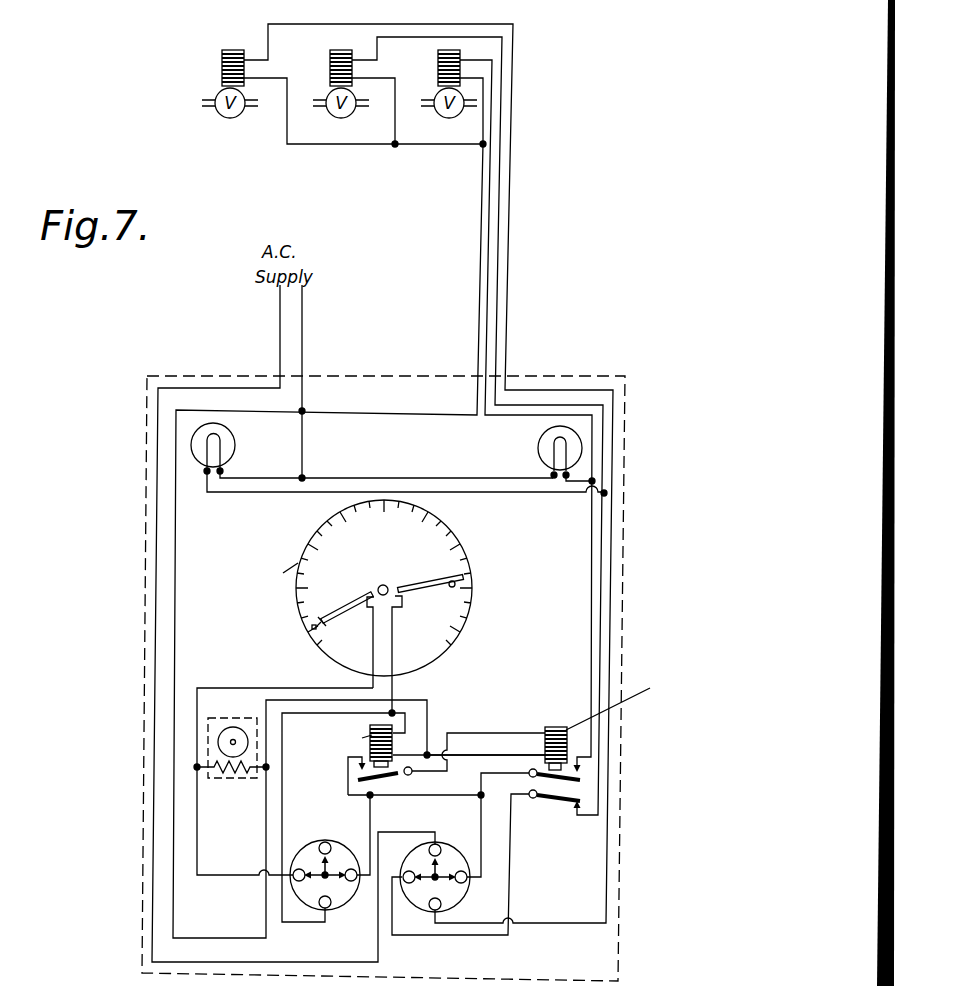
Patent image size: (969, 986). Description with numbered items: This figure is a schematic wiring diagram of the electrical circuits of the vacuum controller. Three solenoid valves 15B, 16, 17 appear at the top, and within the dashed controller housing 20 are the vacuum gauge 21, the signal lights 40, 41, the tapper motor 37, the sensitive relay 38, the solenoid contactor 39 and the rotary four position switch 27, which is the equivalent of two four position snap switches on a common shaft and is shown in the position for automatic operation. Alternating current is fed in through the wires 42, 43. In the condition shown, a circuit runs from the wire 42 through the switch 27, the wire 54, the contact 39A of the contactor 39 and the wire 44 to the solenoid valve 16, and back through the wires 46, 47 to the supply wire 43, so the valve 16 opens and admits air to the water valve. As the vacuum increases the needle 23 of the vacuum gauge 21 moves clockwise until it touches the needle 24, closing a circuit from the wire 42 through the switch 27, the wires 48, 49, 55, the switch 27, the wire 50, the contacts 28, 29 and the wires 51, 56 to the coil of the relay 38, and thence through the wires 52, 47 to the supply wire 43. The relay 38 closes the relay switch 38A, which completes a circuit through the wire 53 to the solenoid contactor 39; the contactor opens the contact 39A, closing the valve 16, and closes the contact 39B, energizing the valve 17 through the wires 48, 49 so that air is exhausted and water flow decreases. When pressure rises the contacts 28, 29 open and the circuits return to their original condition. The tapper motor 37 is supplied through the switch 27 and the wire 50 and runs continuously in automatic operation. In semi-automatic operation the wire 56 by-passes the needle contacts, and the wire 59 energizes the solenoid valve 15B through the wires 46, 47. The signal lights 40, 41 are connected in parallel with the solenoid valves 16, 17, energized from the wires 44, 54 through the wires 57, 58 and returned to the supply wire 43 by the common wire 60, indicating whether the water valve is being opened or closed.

The solenoid valve 15B is at (224, 120).
The solenoid valve 16 is at (336, 120).
The solenoid valve 17 is at (445, 120).
The controller housing 20 is at (622, 558).
The vacuum gauge 21 is at (455, 545).
The needle 23 is at (347, 606).
The needle 24 is at (427, 585).
The rotary four position switch 27 is at (400, 888).
The contact 28 is at (452, 588).
The contact 29 is at (300, 613).
The tapper motor 37 is at (237, 779).
The sensitive relay 38 is at (370, 752).
The relay switch 38A is at (357, 768).
The solenoid contactor 39 is at (551, 727).
The contact 39A is at (585, 805).
The contact 39B is at (583, 768).
The signal light 40 is at (237, 445).
The signal light 41 is at (537, 450).
The wire 42 is at (279, 318).
The supply wire 43 is at (303, 318).
The wire 44 is at (440, 37).
The wire 46 is at (284, 137).
The wire 47 is at (479, 215).
The wire 48 is at (480, 815).
The wire 49 is at (346, 788).
The wire 50 is at (380, 632).
The wire 51 is at (393, 638).
The wire 52 is at (443, 776).
The wire 53 is at (478, 727).
The wire 54 is at (487, 268).
The wire 55 is at (371, 812).
The wire 56 is at (296, 715).
The wire 57 is at (577, 487).
The wire 58 is at (516, 493).
The wire 59 is at (299, 21).
The common wire 60 is at (412, 476).